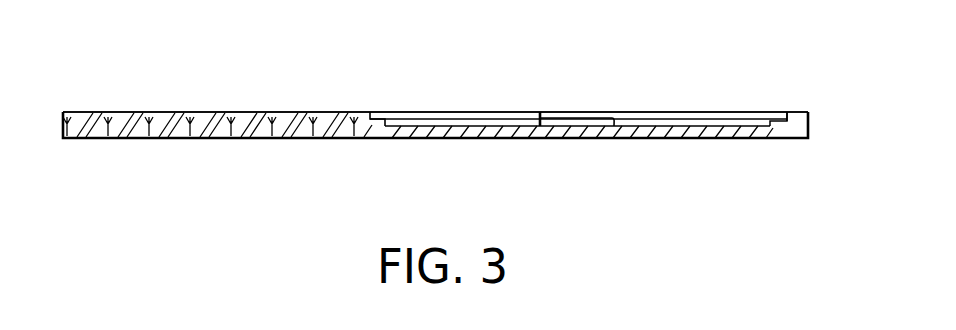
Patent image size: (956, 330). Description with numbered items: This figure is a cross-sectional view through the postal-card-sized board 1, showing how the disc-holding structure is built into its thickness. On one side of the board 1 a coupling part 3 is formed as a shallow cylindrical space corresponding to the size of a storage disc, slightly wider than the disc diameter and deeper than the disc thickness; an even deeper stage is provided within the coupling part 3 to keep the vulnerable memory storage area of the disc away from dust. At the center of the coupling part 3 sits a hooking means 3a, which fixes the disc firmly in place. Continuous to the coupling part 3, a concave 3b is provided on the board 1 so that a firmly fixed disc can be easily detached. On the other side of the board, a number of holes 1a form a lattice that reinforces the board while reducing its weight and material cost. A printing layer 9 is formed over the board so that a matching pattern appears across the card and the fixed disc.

The board 1 is at (262, 140).
The holes 1a is at (222, 112).
The coupling part 3 is at (668, 118).
The hooking means 3a is at (558, 112).
The concave 3b is at (453, 126).
The printing layer 9 is at (797, 133).